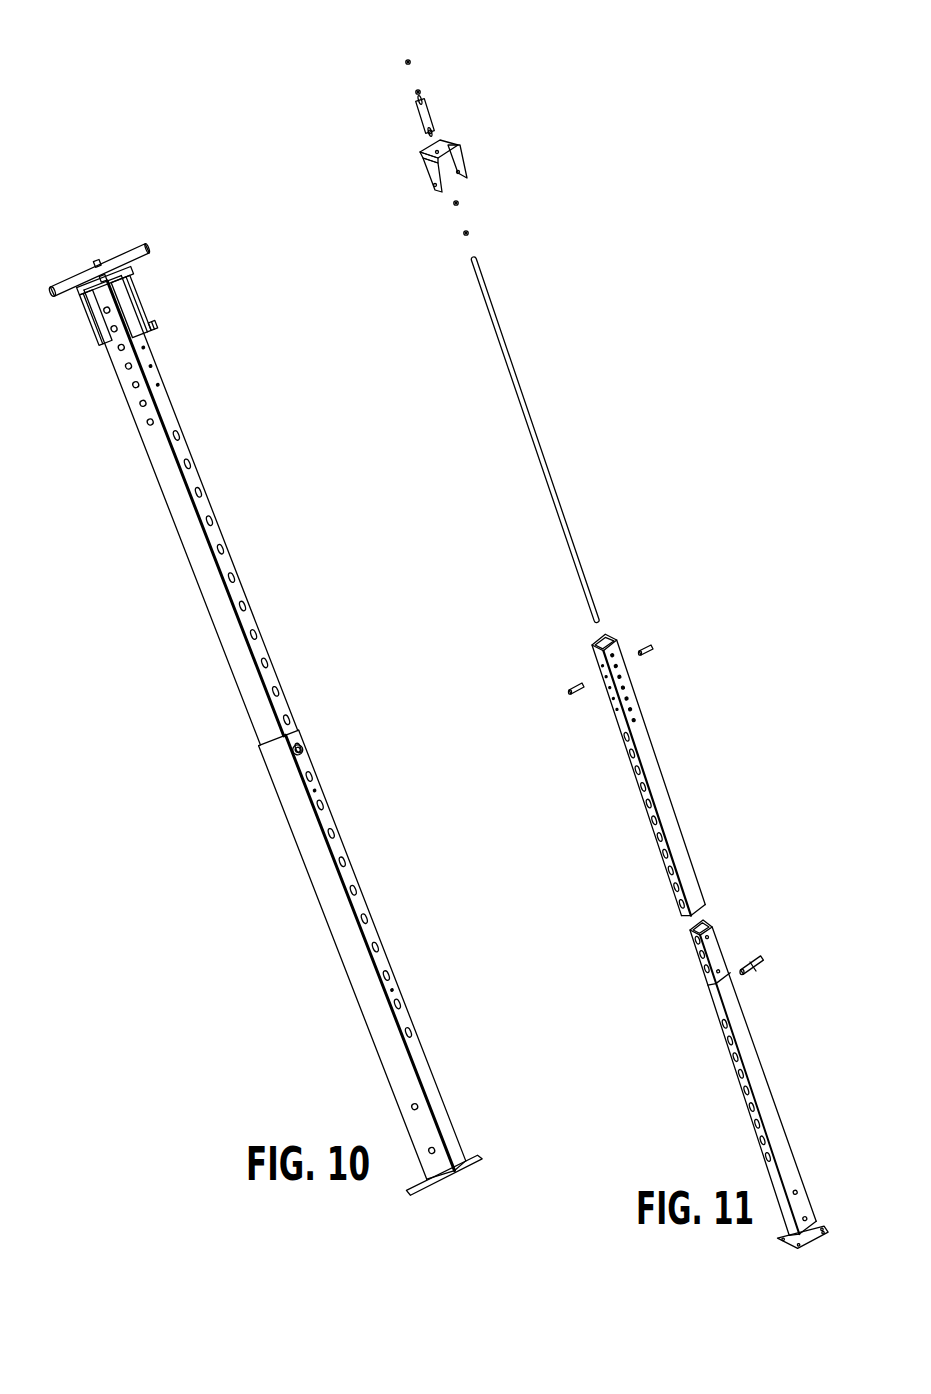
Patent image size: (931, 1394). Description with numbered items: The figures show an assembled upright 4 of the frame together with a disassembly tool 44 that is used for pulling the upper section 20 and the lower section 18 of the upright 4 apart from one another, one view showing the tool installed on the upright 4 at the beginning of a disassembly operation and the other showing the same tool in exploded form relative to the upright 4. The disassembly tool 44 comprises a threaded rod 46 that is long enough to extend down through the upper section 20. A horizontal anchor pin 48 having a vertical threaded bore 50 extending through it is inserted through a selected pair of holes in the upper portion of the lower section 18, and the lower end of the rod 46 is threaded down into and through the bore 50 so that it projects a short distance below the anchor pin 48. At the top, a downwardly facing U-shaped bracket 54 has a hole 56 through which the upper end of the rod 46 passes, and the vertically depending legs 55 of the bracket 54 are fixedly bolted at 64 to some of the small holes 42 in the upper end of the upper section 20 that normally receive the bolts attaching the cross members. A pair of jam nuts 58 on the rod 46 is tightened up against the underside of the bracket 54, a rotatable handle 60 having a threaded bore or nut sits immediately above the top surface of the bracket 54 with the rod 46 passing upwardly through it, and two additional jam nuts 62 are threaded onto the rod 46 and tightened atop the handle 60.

In FIG. 10, the upright 4 is at (278, 626).
In FIG. 10, the lower section 18 is at (277, 770).
In FIG. 11, the lower section 18 is at (753, 1083).
In FIG. 10, the upper section 20 is at (197, 563).
In FIG. 11, the upper section 20 is at (648, 774).
In FIG. 10, the small holes 42 is at (151, 373).
In FIG. 11, the disassembly tool 44 is at (554, 256).
In FIG. 11, the threaded rod 46 is at (538, 430).
In FIG. 10, the anchor pin 48 is at (304, 756).
In FIG. 11, the anchor pin 48 is at (763, 957).
In FIG. 11, the threaded bore 50 is at (750, 971).
In FIG. 10, the U-shaped bracket 54 is at (146, 294).
In FIG. 11, the U-shaped bracket 54 is at (460, 142).
In FIG. 10, the legs 55 is at (141, 306).
In FIG. 11, the legs 55 is at (445, 168).
In FIG. 11, the hole 56 is at (441, 142).
In FIG. 11, the jam nuts 58 is at (463, 205).
In FIG. 10, the rotatable handle 60 is at (137, 246).
In FIG. 11, the rotatable handle 60 is at (417, 123).
In FIG. 10, the jam nuts 62 is at (104, 276).
In FIG. 11, the jam nuts 62 is at (405, 64).
In FIG. 10, the bolts 64 is at (154, 327).